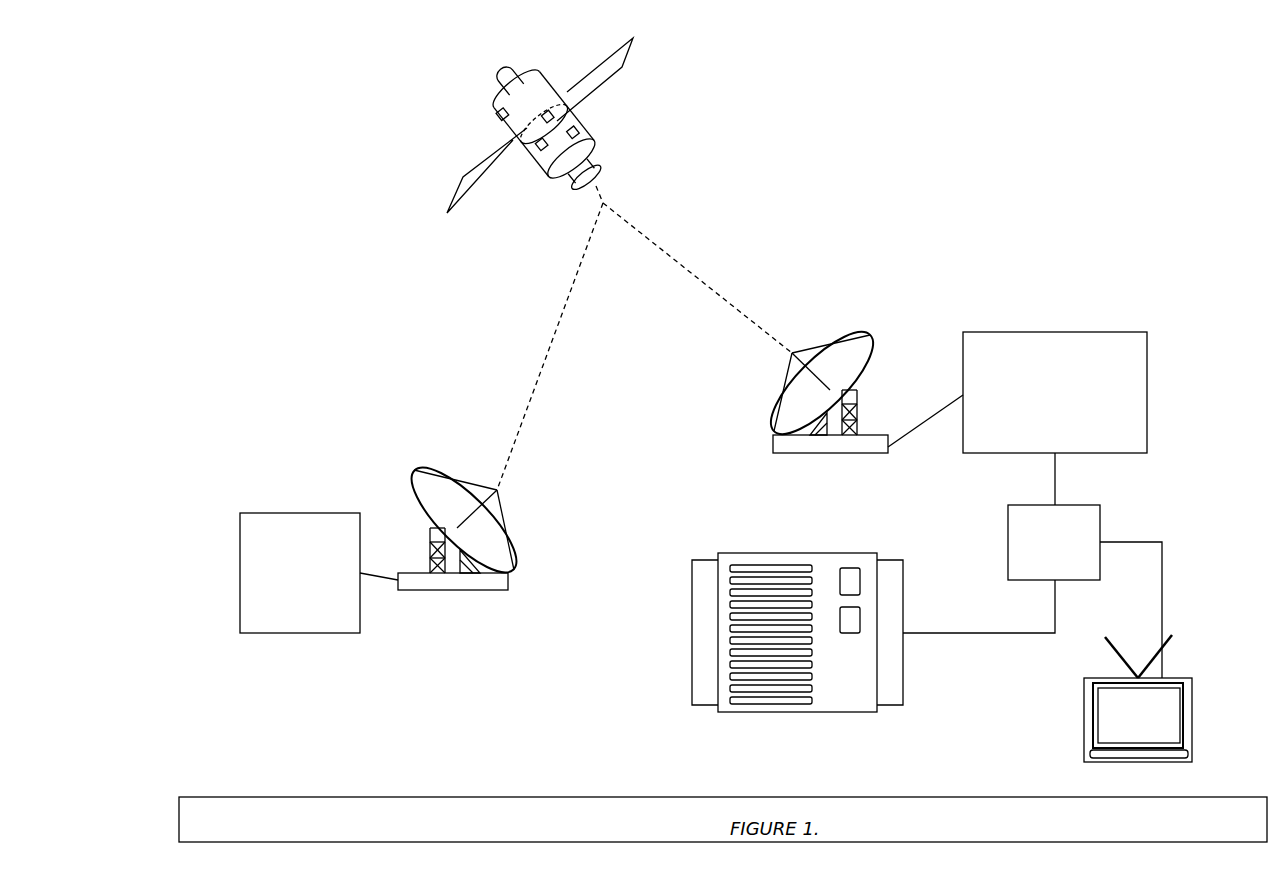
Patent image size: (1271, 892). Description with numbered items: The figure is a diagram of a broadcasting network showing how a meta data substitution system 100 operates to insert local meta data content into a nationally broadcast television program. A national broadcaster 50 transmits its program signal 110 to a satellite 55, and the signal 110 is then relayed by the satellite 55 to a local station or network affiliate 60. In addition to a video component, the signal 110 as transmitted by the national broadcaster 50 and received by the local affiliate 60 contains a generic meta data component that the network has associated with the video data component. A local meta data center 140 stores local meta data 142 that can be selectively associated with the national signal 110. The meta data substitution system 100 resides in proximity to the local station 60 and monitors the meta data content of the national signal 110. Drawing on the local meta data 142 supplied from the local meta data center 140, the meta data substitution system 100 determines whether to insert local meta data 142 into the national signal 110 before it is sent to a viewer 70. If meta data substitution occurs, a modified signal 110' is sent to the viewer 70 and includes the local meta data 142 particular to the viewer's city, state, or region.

The national broadcaster 50 is at (300, 512).
The satellite 55 is at (587, 137).
The local station or network affiliate 60 is at (1055, 330).
The viewer 70 is at (1187, 690).
The meta data substitution system 100 is at (1054, 516).
The program signal 110 is at (644, 338).
The modified signal 110' is at (1173, 595).
The local meta data center 140 is at (797, 553).
The local meta data 142 is at (950, 632).